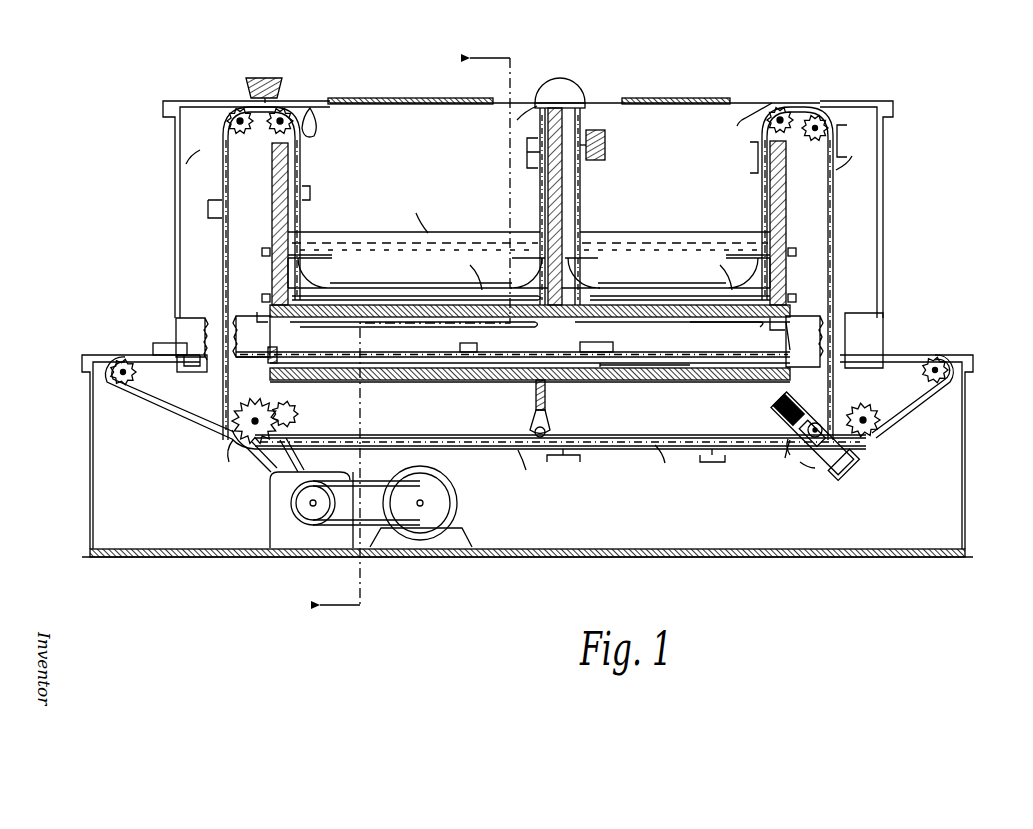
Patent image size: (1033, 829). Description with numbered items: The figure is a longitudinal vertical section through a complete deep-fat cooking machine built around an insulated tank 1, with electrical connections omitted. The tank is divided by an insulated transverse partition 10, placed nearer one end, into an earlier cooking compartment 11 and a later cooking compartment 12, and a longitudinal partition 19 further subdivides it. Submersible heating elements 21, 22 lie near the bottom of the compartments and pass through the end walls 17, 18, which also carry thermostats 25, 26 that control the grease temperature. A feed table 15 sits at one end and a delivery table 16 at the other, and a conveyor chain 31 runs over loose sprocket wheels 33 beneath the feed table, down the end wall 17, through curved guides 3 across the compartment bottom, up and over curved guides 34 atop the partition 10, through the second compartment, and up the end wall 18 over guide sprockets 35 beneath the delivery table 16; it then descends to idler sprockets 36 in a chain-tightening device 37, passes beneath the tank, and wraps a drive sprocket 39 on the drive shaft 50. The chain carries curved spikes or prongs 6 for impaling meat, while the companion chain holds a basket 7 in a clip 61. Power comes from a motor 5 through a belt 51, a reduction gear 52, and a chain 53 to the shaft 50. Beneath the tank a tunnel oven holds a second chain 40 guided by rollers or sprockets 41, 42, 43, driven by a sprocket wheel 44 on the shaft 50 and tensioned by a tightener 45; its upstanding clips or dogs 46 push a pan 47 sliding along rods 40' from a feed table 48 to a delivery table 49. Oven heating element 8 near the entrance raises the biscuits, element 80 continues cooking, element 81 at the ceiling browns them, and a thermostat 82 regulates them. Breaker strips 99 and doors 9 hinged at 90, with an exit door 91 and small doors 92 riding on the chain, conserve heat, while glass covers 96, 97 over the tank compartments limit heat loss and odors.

The tank 1 is at (603, 92).
The curved guides 3 is at (797, 266).
The motor 5 is at (448, 515).
The curved spikes or prongs 6 is at (752, 113).
The basket 7 is at (265, 78).
The heating element 8 is at (350, 368).
The doors 9 is at (270, 332).
The transverse partition 10 is at (545, 182).
The cooking compartment 11 is at (494, 199).
The cooking compartment 12 is at (655, 257).
The feed table 15 is at (192, 100).
The delivery table 16 is at (870, 101).
The end wall 17 is at (272, 186).
The end wall 18 is at (786, 186).
The longitudinal partition 19 is at (372, 232).
The heating element 21 is at (381, 296).
The heating element 22 is at (700, 296).
The thermostat 25 is at (325, 253).
The thermostat 26 is at (739, 252).
The chain 31 is at (478, 267).
The loose sprocket wheels 33 is at (232, 132).
The curved guides 34 is at (563, 78).
The guide sprockets 35 is at (815, 110).
The idler sprockets 36 is at (840, 408).
The chain-tightening device 37 is at (847, 462).
The drive sprocket 39 is at (283, 421).
The chain 40 is at (560, 417).
The rods 40' is at (195, 392).
The roller or sprocket 41 is at (115, 355).
The roller or sprocket 42 is at (940, 356).
The roller or sprocket 43 is at (868, 428).
The sprocket wheel 44 is at (230, 425).
The tightener 45 is at (546, 430).
The clips or dogs 46 is at (480, 357).
The pan 47 is at (173, 347).
The feed table 48 is at (90, 355).
The delivery table 49 is at (963, 352).
The drive shaft 50 is at (250, 424).
The belt 51 is at (340, 525).
The reduction gear 52 is at (280, 510).
The chain 53 is at (262, 466).
The clip 61 is at (305, 190).
The heating element 80 is at (682, 363).
The heating element 81 is at (553, 330).
The thermostat 82 is at (733, 315).
The hinge 90 is at (257, 312).
The door 91 is at (790, 330).
The small doors 92 is at (277, 357).
The glass cover 96 is at (420, 98).
The glass cover 97 is at (667, 98).
The breaker strips 99 is at (773, 320).